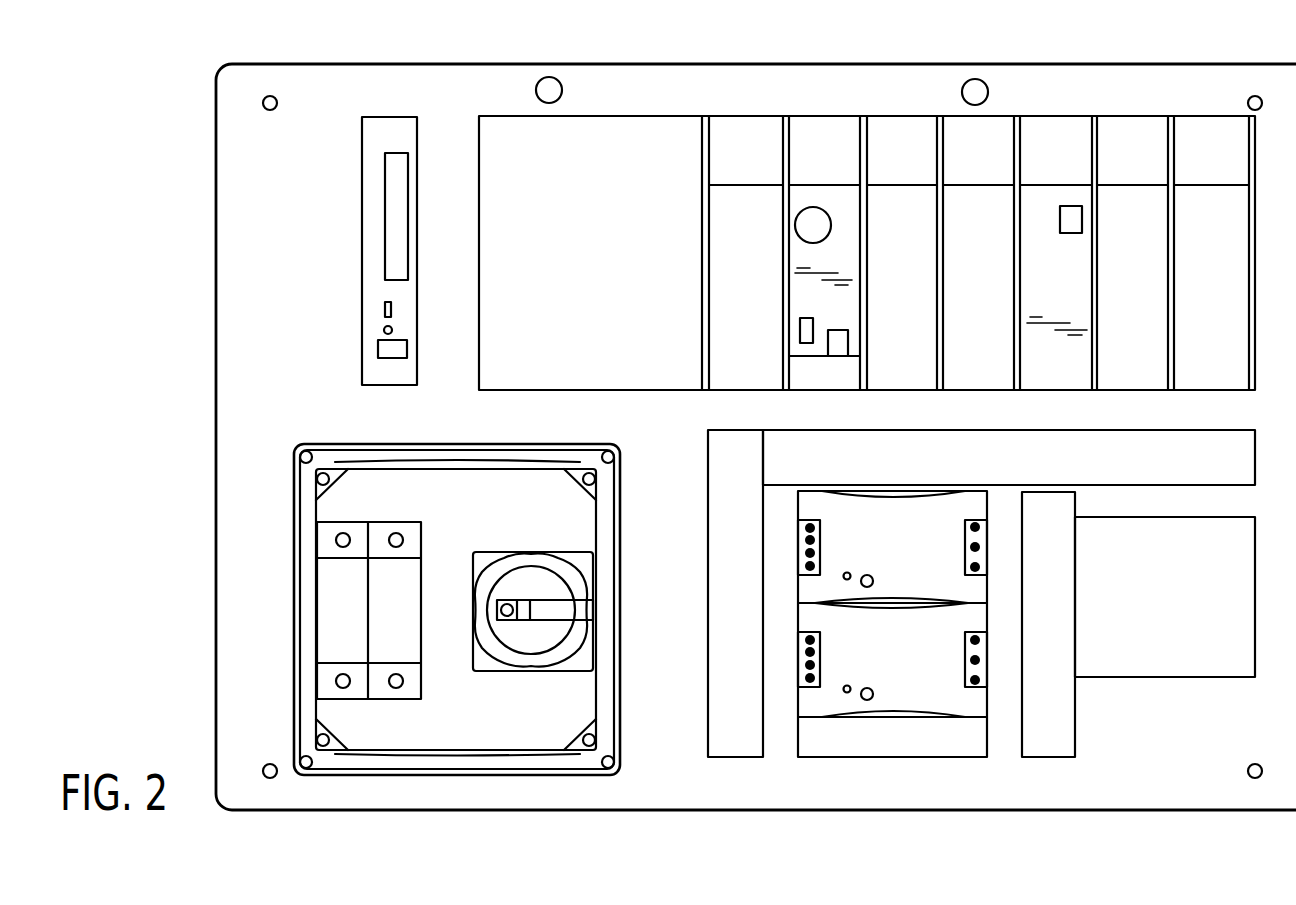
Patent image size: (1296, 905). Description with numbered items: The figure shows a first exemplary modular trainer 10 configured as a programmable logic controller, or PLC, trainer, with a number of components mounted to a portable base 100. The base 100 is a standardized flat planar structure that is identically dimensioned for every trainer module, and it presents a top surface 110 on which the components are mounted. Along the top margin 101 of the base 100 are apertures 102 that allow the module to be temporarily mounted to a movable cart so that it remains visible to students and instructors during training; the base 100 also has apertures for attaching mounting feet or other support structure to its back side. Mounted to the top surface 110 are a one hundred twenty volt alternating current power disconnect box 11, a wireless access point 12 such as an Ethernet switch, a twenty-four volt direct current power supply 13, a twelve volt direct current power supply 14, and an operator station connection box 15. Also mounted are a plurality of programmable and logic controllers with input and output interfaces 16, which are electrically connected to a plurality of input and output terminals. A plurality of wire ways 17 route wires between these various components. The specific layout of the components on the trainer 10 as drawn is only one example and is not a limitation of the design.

The modular trainer 10 is at (173, 318).
The base 100 is at (216, 540).
The top surface 110 is at (243, 247).
The top margin 101 is at (773, 90).
The apertures 102 is at (548, 90).
The AC power disconnect box 11 is at (458, 721).
The wireless access point 12 is at (372, 225).
The 24 volt DC power supply 13 is at (895, 672).
The 12 volt DC power supply 14 is at (895, 527).
The operator station connection box 15 is at (1178, 651).
The programmable and logic controllers with input and output interfaces 16 is at (1133, 365).
The wire ways 17 is at (1182, 451).